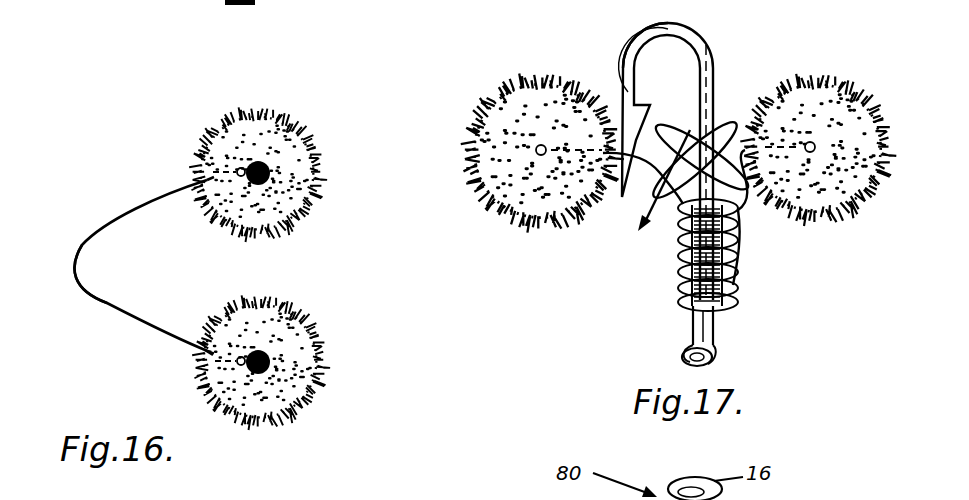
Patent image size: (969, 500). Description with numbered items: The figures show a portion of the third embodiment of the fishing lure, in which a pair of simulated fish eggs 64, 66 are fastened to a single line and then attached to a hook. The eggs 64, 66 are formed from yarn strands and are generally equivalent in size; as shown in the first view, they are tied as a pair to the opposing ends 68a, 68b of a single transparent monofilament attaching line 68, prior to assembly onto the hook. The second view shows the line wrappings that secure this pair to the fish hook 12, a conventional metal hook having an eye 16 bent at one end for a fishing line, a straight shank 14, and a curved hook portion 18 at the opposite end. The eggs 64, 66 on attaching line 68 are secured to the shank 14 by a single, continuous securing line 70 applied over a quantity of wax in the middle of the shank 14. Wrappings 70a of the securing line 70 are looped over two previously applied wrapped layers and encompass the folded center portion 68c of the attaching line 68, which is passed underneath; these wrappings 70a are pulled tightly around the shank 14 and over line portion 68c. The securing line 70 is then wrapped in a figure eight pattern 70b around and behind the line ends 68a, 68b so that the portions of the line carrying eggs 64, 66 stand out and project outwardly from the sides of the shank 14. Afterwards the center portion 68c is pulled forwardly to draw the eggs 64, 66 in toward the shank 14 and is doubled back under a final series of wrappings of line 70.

In FIG. 17, the fish hook 12 is at (722, 332).
In FIG. 17, the shank 14 is at (697, 127).
In FIG. 17, the eye 16 is at (680, 358).
In FIG. 17, the curved hook portion 18 is at (687, 33).
In FIG. 17, the simulated fish egg 64 is at (503, 218).
In FIG. 16, the simulated fish egg 66 is at (273, 338).
In FIG. 17, the simulated fish egg 66 is at (838, 180).
In FIG. 16, the attaching line 68 is at (108, 218).
In FIG. 16, the end of attaching line 68a is at (193, 158).
In FIG. 17, the end of attaching line 68a is at (640, 200).
In FIG. 16, the end of attaching line 68b is at (207, 372).
In FIG. 17, the end of attaching line 68b is at (745, 170).
In FIG. 16, the folded center portion of attaching line 68c is at (75, 265).
In FIG. 17, the folded center portion of attaching line 68c is at (733, 285).
In FIG. 17, the securing line 70 is at (690, 243).
In FIG. 17, the wrappings 70a is at (740, 238).
In FIG. 17, the figure eight pattern 70b is at (727, 123).